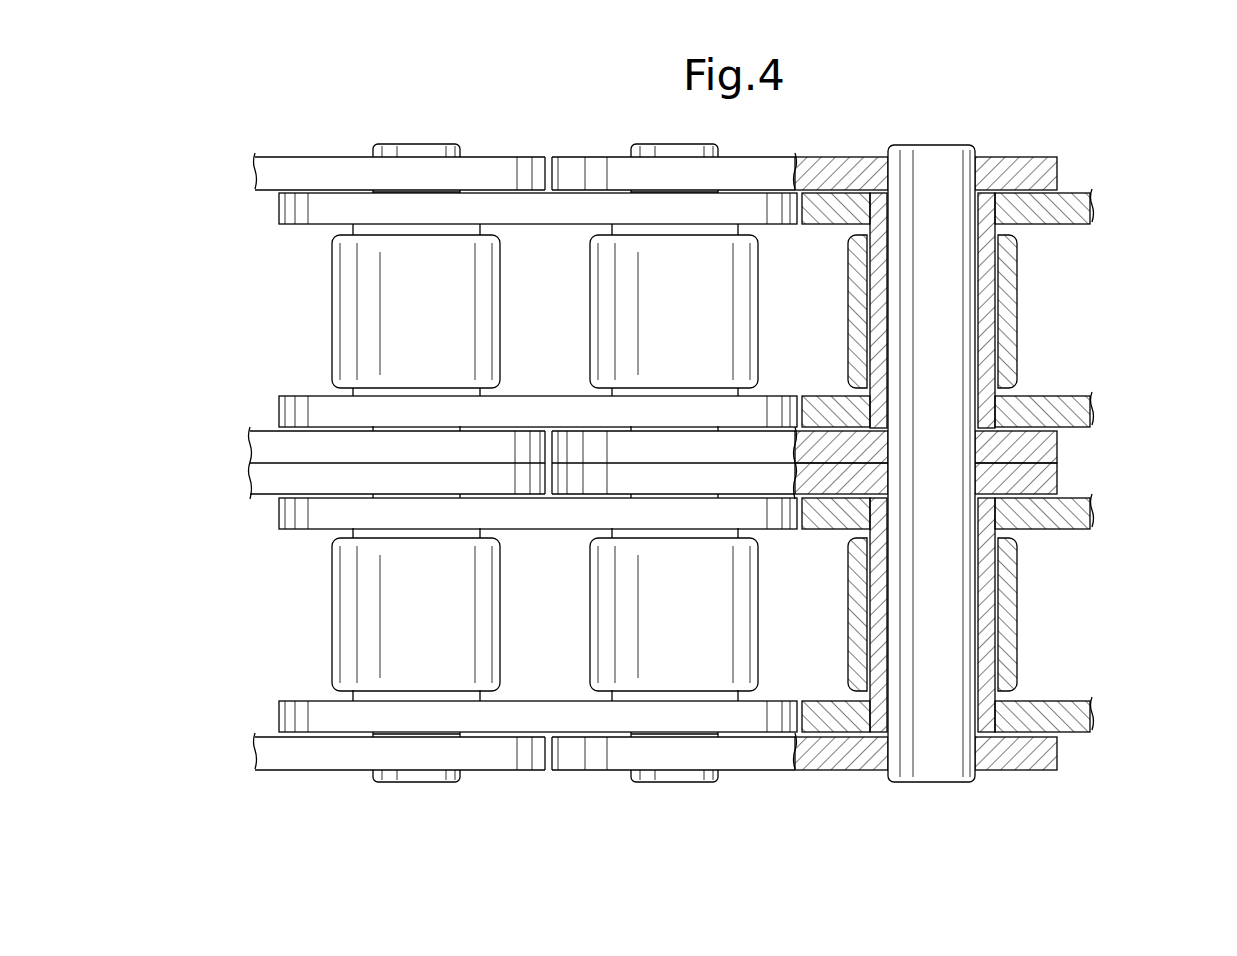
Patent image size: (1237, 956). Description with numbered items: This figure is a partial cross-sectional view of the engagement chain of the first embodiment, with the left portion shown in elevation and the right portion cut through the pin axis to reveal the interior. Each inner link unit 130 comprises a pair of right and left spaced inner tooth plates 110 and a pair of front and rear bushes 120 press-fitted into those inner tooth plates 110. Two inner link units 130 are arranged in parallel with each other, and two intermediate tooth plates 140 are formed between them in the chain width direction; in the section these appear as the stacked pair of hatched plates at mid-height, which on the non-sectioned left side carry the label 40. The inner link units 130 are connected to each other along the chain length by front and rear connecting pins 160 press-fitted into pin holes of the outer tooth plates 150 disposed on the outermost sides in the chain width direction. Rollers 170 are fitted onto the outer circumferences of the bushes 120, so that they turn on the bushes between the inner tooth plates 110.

The plates 40 is at (270, 447).
The inner tooth plate 110 is at (297, 208).
The bush 120 is at (988, 302).
The inner link unit 130 is at (1172, 413).
The intermediate tooth plate 140 is at (1040, 452).
The outer tooth plate 150 is at (270, 173).
The connecting pin 160 is at (936, 173).
The roller 170 is at (362, 312).